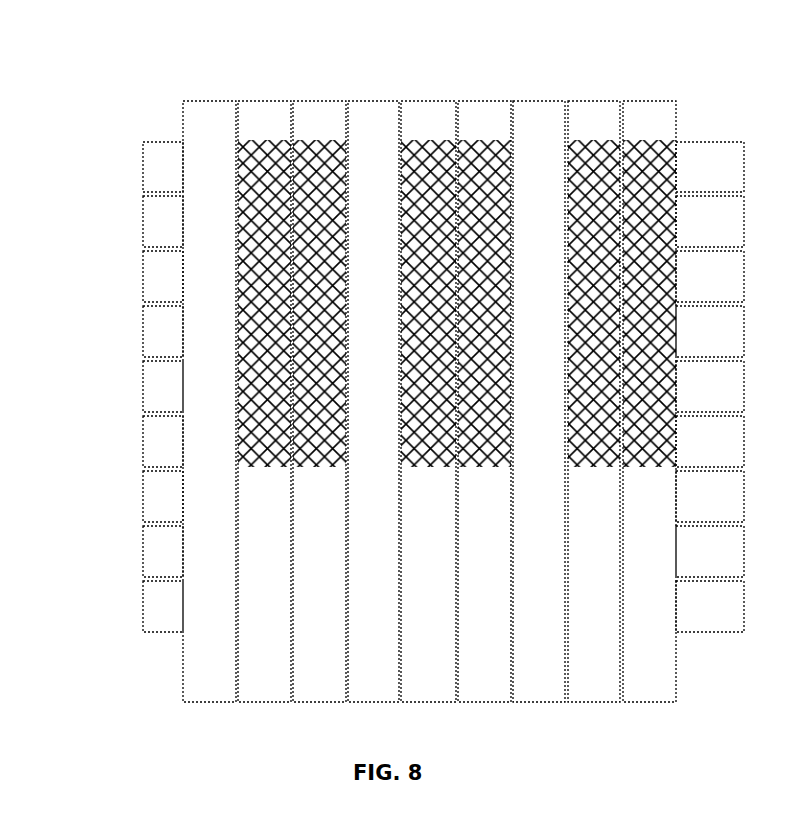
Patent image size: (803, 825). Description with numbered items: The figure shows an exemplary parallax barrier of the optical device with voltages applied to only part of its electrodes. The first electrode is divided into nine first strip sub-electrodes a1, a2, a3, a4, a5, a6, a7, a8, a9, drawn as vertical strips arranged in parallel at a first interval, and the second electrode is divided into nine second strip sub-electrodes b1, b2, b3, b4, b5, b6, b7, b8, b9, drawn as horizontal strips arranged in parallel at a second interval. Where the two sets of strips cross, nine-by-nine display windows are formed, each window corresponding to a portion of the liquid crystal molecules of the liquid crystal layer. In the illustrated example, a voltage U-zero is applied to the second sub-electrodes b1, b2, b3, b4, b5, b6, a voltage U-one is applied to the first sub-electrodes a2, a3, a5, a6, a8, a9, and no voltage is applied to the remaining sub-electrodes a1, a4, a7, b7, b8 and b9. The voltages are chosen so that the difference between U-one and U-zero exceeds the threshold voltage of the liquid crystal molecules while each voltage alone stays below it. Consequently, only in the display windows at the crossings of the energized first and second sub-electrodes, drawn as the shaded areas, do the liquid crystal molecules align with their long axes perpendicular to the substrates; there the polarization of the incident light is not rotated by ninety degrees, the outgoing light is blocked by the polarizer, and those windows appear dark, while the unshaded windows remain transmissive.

The first strip sub-electrode a1 is at (210, 101).
The first strip sub-electrode a2 is at (264, 101).
The first strip sub-electrode a3 is at (320, 101).
The first strip sub-electrode a4 is at (374, 101).
The first strip sub-electrode a5 is at (429, 101).
The first strip sub-electrode a6 is at (484, 101).
The first strip sub-electrode a7 is at (539, 101).
The first strip sub-electrode a8 is at (594, 101).
The first strip sub-electrode a9 is at (649, 101).
The second strip sub-electrode b1 is at (143, 166).
The second strip sub-electrode b2 is at (143, 221).
The second strip sub-electrode b3 is at (143, 276).
The second strip sub-electrode b4 is at (143, 331).
The second strip sub-electrode b5 is at (143, 386).
The second strip sub-electrode b6 is at (143, 441).
The second strip sub-electrode b7 is at (143, 496).
The second strip sub-electrode b8 is at (143, 551).
The second strip sub-electrode b9 is at (143, 606).